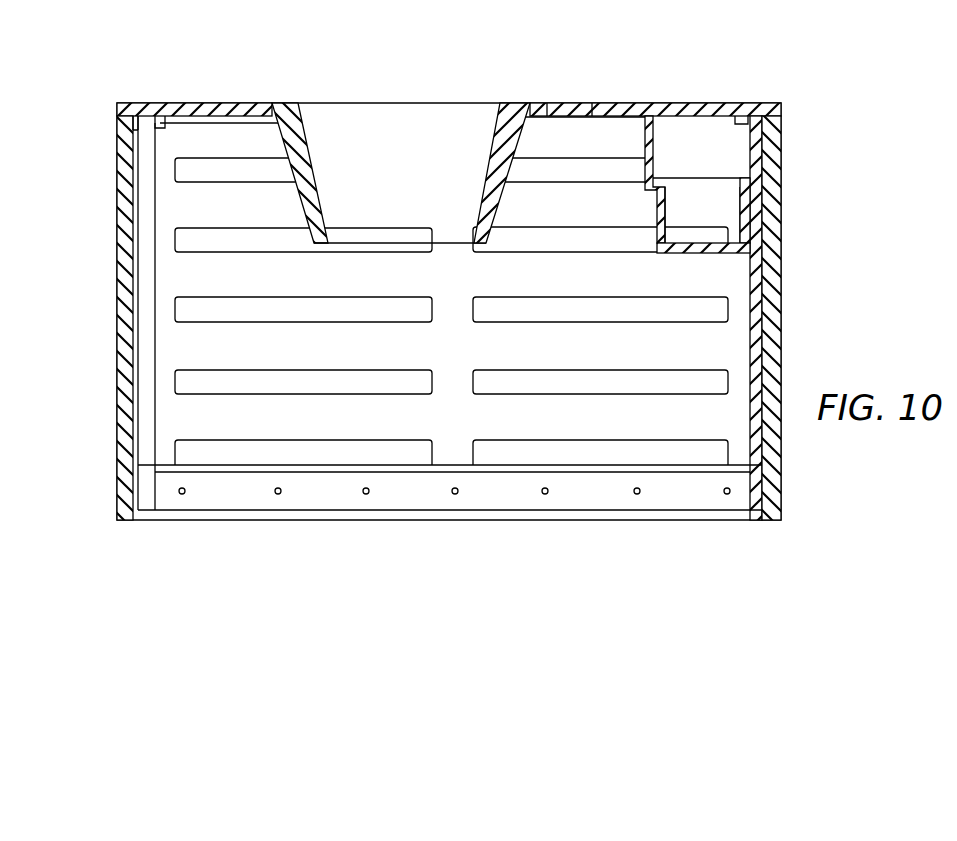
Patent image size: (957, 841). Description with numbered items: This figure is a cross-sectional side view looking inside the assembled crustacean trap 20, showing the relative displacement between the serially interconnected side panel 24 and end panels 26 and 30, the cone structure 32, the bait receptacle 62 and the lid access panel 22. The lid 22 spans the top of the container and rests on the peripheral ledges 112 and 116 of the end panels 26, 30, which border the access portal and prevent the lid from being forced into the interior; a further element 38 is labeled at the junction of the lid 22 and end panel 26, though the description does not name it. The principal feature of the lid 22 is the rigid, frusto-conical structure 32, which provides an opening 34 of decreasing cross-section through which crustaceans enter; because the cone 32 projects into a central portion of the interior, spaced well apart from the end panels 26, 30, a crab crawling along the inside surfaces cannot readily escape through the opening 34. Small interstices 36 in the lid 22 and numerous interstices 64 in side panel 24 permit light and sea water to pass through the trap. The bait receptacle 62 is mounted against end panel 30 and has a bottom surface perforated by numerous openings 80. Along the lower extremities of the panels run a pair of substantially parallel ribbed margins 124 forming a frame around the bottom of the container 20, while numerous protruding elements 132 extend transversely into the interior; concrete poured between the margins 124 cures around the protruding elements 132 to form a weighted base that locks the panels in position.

The crustacean trap 20 is at (666, 43).
The lid access panel 22 is at (222, 103).
The side panel 24 is at (377, 427).
The end panel 26 is at (117, 224).
The end panel 30 is at (772, 297).
The frusto-conical structure 32 is at (492, 218).
The opening 34 is at (388, 122).
The interstices 36 is at (592, 103).
The hook 38 is at (162, 117).
The bait receptacle 62 is at (653, 149).
The interstices 64 is at (228, 181).
The openings 80 is at (722, 253).
The ledge 112 is at (117, 121).
The ledge 116 is at (770, 114).
The ribbed margins 124 is at (156, 500).
The protruding elements 132 is at (135, 481).